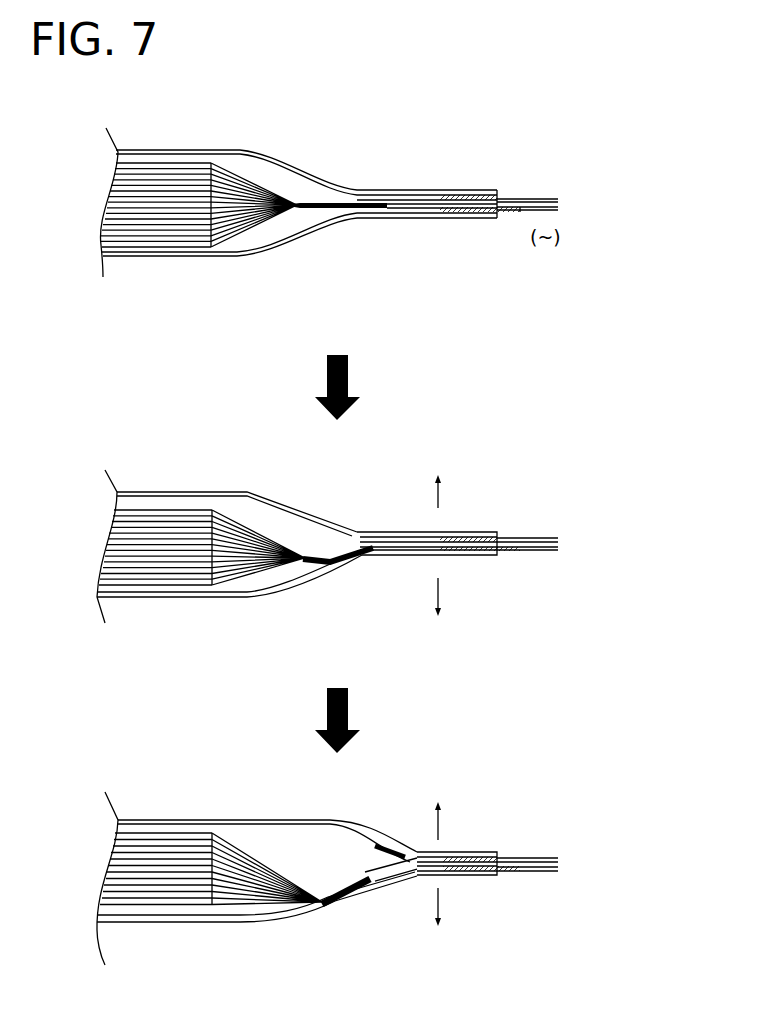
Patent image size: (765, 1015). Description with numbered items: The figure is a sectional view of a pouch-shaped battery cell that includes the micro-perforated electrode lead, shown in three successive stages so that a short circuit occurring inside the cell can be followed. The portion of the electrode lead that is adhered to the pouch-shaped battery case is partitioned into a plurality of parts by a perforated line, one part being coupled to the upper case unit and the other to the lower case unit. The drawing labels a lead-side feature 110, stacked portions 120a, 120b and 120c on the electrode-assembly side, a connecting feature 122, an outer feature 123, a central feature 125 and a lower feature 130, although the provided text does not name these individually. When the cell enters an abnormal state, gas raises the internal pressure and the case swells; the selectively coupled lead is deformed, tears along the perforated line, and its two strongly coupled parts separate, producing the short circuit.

The electrode lead 110 is at (407, 188).
The first region of electrode tab stack 120a is at (104, 240).
The second region of electrode tab stack 120b is at (172, 222).
The third (converging) region of electrode tab stack 120c is at (207, 232).
The electrode tab 122 is at (330, 217).
The lead film 123 is at (513, 220).
The welded portion 125 is at (405, 209).
The insulating tape 130 is at (428, 220).